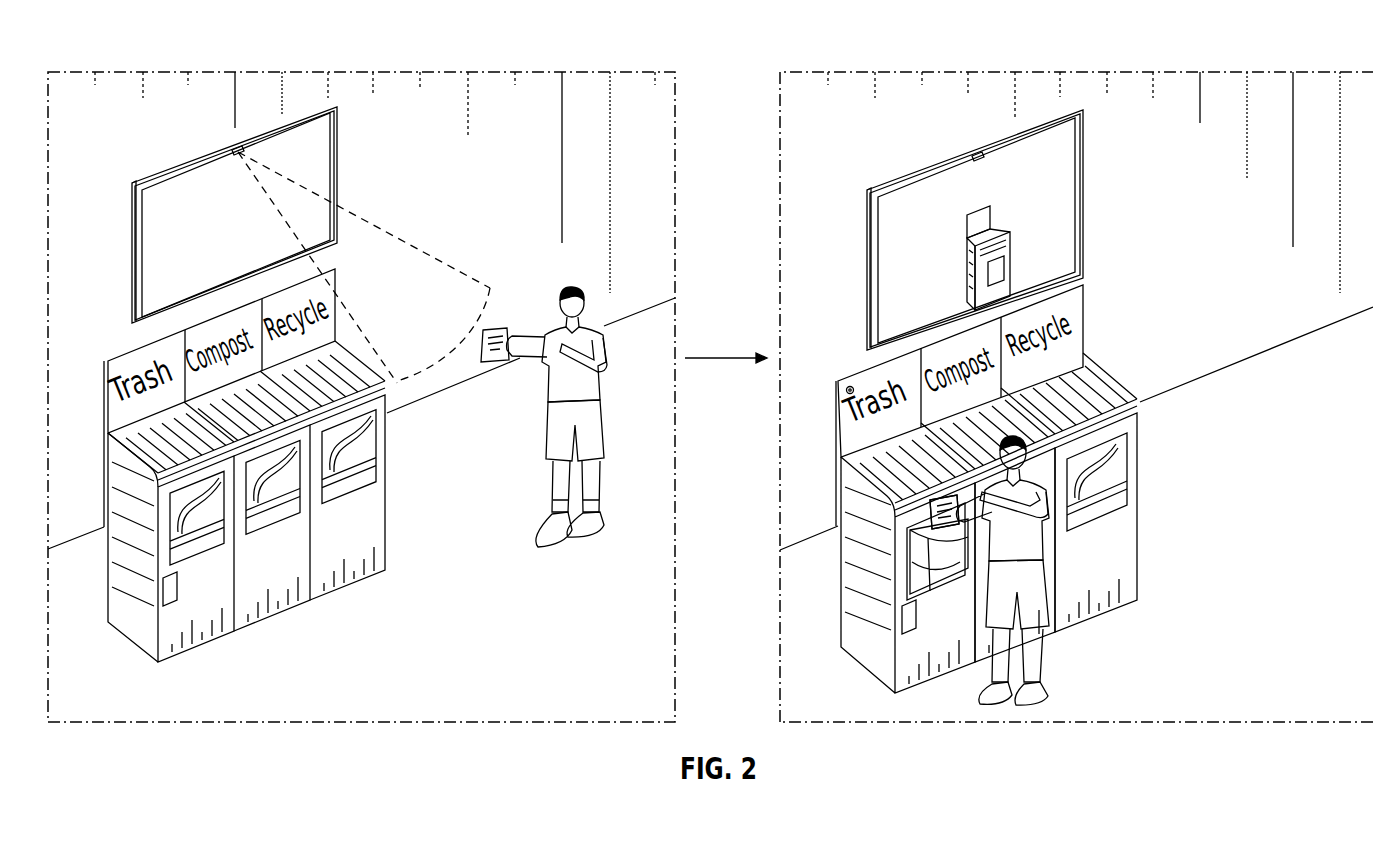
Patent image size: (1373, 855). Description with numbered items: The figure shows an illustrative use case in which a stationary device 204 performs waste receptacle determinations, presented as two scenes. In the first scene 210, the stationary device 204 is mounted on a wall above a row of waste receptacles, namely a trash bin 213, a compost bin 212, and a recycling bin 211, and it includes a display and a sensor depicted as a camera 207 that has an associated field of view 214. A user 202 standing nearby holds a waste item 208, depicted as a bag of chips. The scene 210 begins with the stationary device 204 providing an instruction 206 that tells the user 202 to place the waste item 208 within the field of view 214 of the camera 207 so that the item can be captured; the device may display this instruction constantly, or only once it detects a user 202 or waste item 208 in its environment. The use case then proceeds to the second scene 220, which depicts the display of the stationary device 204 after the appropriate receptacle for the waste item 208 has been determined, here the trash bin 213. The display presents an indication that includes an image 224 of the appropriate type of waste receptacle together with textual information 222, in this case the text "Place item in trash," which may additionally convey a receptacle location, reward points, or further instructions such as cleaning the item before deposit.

The user 202 is at (618, 405).
The stationary device 204 is at (644, 228).
The instruction 206 is at (156, 190).
The camera 207 is at (232, 148).
The waste item 208 is at (493, 364).
The scene 210 is at (120, 68).
The recycling bin 211 is at (367, 562).
The compost bin 212 is at (302, 596).
The trash bin 213 is at (208, 637).
The field of view 214 is at (402, 262).
The scene 220 is at (852, 68).
The textual information 222 is at (914, 190).
The image 224 is at (1024, 243).